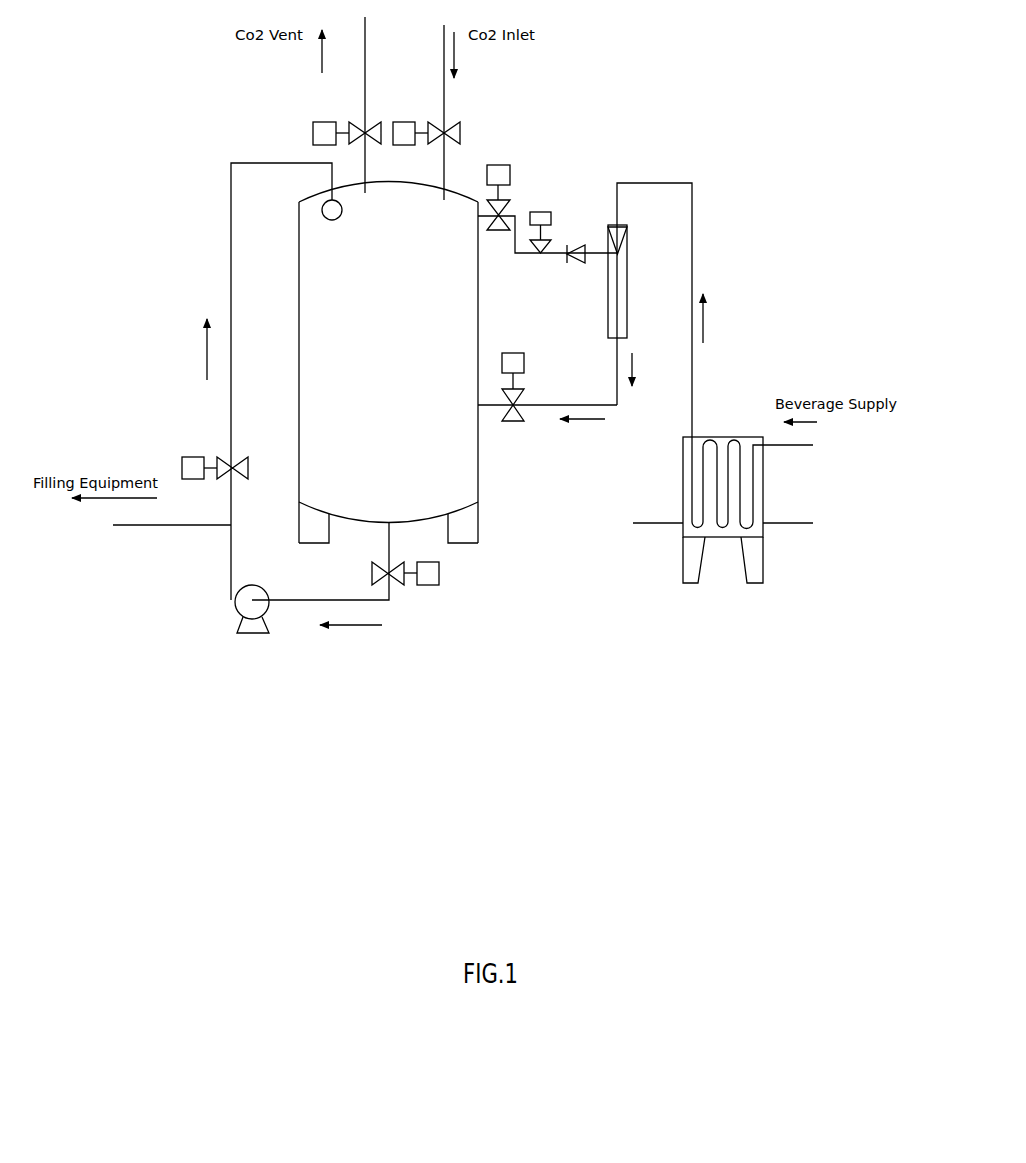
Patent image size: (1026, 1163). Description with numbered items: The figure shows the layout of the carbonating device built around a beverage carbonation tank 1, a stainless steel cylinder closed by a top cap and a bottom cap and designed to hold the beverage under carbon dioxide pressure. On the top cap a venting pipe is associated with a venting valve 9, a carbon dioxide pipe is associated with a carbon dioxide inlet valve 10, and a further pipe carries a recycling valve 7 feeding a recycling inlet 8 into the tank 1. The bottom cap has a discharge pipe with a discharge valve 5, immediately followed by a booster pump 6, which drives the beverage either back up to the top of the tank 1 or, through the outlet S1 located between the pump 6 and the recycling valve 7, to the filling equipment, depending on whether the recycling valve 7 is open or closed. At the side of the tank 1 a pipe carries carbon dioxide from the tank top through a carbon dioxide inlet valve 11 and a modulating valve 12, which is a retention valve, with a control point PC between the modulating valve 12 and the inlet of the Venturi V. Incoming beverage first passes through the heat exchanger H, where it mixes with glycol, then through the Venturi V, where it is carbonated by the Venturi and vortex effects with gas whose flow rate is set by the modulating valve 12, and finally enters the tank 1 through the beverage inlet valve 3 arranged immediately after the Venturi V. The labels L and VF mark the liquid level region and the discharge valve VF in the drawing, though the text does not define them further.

The beverage carbonation tank 1 is at (394, 333).
The beverage inlet valve 3 is at (524, 387).
The discharge valve 5 is at (418, 573).
The booster pump 6 is at (251, 620).
The recycling valve 7 is at (212, 454).
The recycling inlet 8 is at (315, 223).
The venting valve 9 is at (347, 124).
The carbon dioxide inlet valve 10 is at (434, 125).
The carbon dioxide inlet valve to the Venturi 11 is at (509, 189).
The modulating valve 12 is at (548, 223).
The level L is at (368, 184).
The Venturi V is at (642, 257).
The control point PC is at (580, 244).
The outlet S1 is at (187, 522).
The valve VF is at (392, 563).
The heat exchanger H is at (723, 510).